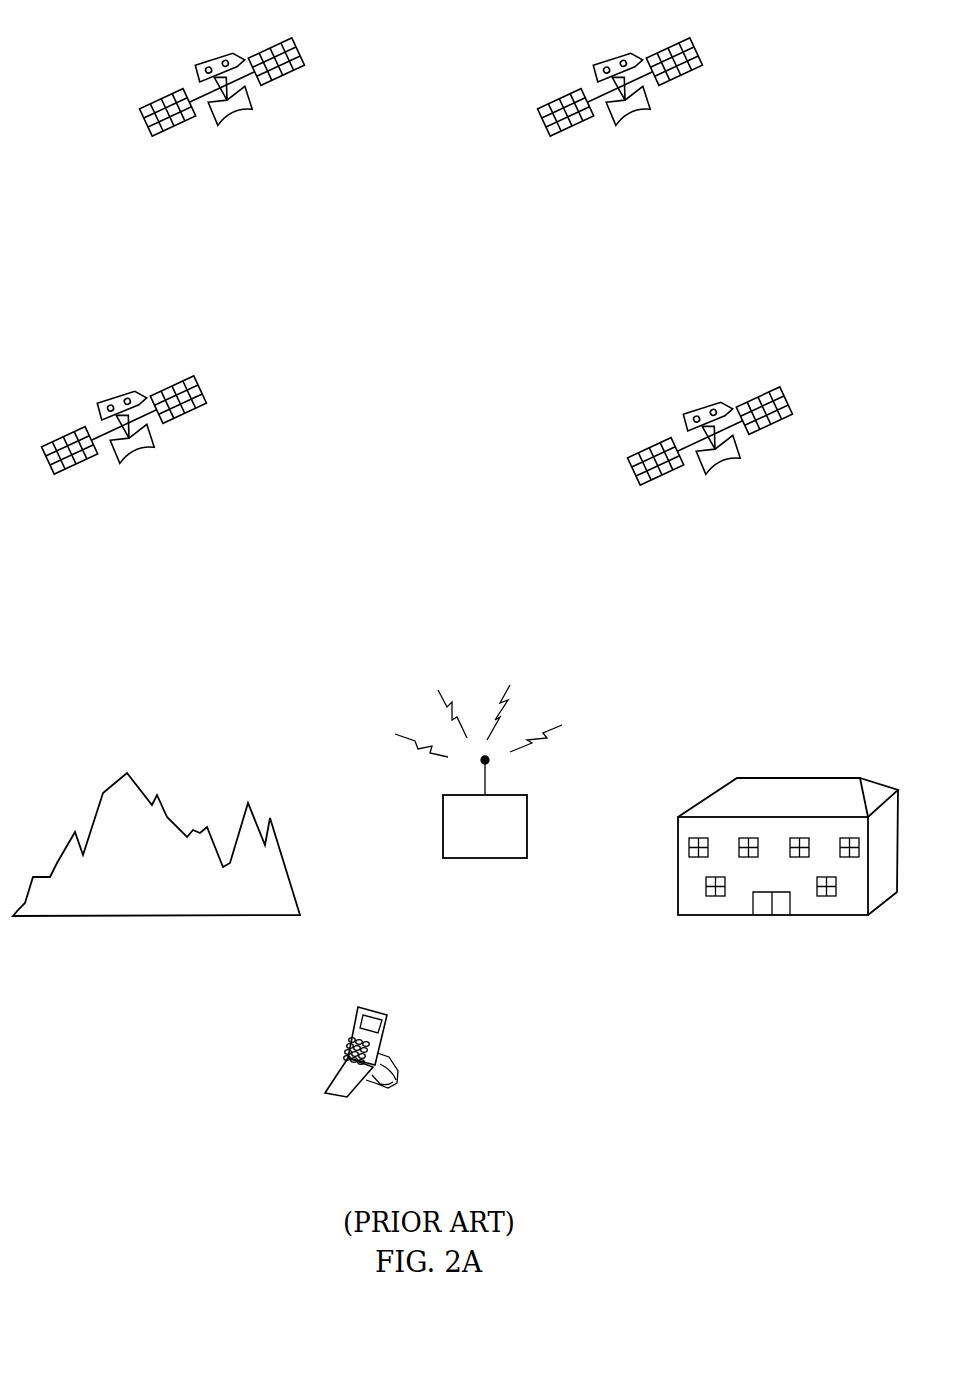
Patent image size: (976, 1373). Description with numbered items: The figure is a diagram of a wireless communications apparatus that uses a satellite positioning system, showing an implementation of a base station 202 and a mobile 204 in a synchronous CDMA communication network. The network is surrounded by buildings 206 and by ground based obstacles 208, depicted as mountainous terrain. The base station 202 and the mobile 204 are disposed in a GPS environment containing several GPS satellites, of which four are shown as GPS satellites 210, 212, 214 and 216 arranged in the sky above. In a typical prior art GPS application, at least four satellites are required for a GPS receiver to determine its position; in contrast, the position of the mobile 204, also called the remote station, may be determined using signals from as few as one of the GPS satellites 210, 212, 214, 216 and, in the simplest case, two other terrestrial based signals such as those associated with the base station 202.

The base station 202 is at (498, 858).
The mobile 204 is at (370, 1007).
The buildings 206 is at (833, 778).
The ground based obstacles 208 is at (127, 773).
The GPS satellite 210 is at (191, 380).
The GPS satellite 212 is at (289, 42).
The GPS satellite 214 is at (687, 42).
The GPS satellite 216 is at (777, 391).